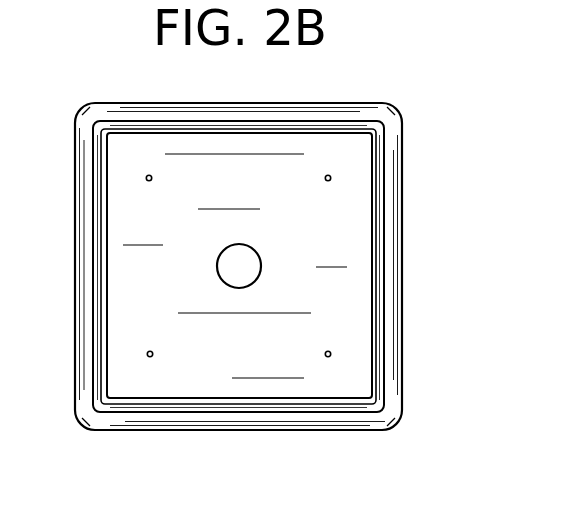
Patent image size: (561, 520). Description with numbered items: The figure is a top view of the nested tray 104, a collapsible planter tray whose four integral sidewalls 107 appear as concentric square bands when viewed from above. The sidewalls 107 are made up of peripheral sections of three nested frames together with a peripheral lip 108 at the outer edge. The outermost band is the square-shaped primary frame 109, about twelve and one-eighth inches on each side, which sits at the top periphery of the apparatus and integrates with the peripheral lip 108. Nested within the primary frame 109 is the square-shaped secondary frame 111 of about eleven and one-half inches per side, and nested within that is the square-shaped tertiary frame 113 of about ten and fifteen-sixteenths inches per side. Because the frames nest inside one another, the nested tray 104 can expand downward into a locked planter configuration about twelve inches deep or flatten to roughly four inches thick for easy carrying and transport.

The nested tray 104 is at (54, 148).
The sidewalls 107 is at (98, 280).
The peripheral lip 108 is at (82, 215).
The primary frame 109 is at (402, 147).
The secondary frame 111 is at (388, 198).
The tertiary frame 113 is at (373, 263).